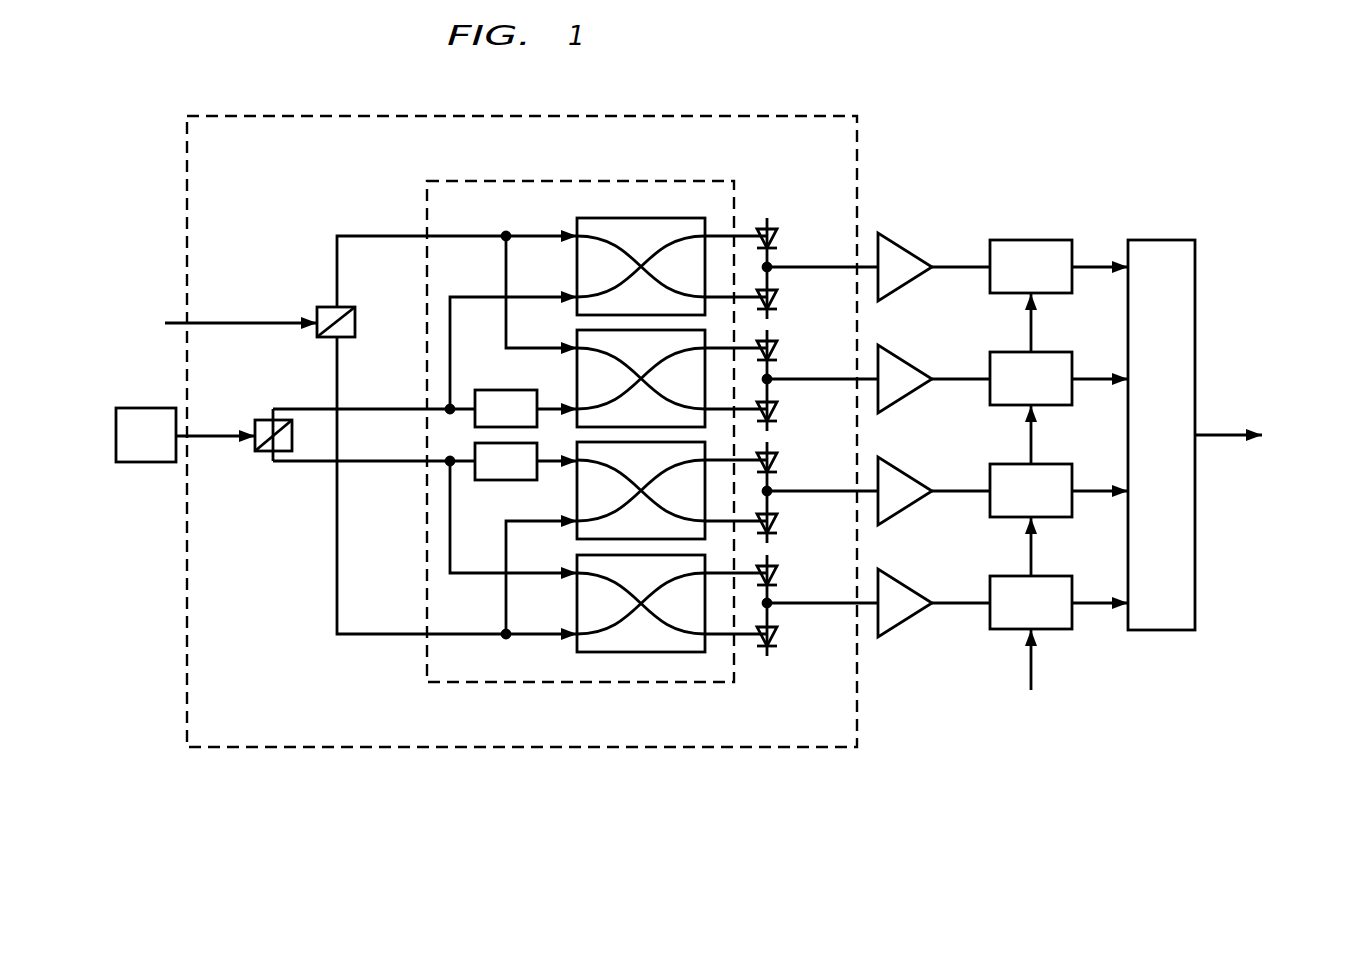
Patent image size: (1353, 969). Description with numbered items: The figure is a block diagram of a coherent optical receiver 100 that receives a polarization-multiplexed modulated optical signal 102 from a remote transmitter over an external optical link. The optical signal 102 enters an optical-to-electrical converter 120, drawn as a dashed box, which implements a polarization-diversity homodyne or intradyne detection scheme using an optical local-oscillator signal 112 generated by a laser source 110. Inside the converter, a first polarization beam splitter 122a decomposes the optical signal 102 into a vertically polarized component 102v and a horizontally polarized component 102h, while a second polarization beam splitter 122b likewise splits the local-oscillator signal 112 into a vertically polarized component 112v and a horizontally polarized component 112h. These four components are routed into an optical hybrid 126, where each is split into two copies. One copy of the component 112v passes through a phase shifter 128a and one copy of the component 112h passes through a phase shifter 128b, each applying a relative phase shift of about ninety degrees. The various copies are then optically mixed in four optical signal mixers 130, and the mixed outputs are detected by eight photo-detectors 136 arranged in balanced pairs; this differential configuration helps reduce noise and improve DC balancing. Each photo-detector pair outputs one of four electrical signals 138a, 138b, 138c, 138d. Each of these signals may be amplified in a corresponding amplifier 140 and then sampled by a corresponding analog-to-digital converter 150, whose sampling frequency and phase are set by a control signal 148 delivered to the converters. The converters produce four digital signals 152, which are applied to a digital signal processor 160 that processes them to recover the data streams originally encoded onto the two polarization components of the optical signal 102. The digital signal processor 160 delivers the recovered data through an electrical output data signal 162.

The coherent optical receiver 100 is at (531, 81).
The polarization-multiplexed modulated optical signal 102 is at (210, 323).
The vertically polarized component 102v is at (337, 278).
The horizontally polarized component 102h is at (337, 372).
The laser source 110 is at (116, 435).
The optical local-oscillator signal 112 is at (213, 440).
The vertically polarized component 112v is at (411, 414).
The horizontally polarized component 112h is at (380, 464).
The optical-to-electrical converter 120 is at (187, 135).
The polarization beam splitter 122a is at (320, 338).
The polarization beam splitter 122b is at (259, 452).
The optical hybrid 126 is at (592, 181).
The phase shifter 128a is at (497, 392).
The phase shifter 128b is at (500, 481).
The optical signal mixer 130 is at (623, 245).
The photo-detector 136 is at (768, 208).
The electrical signal 138a is at (813, 265).
The electrical signal 138b is at (813, 377).
The electrical signal 138c is at (813, 489).
The electrical signal 138d is at (813, 601).
The amplifier 140 is at (897, 250).
The control signal 148 is at (1031, 678).
The analog-to-digital converter 150 is at (1017, 293).
The digital signal 152 is at (1091, 265).
The digital signal processor 160 is at (1154, 240).
The electrical output data signal 162 is at (1220, 434).